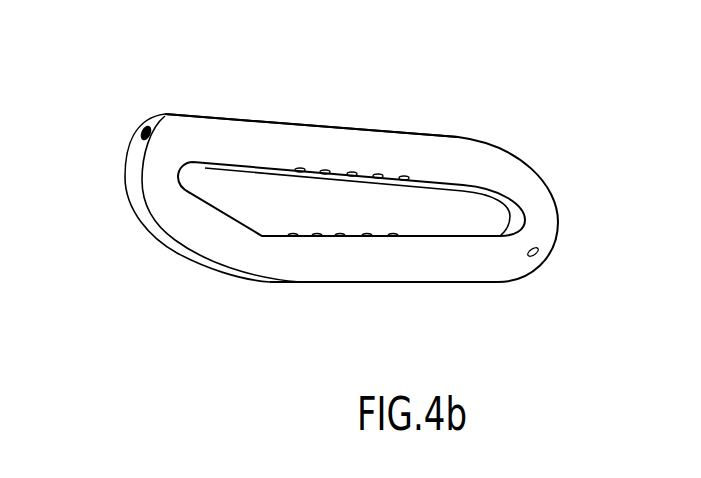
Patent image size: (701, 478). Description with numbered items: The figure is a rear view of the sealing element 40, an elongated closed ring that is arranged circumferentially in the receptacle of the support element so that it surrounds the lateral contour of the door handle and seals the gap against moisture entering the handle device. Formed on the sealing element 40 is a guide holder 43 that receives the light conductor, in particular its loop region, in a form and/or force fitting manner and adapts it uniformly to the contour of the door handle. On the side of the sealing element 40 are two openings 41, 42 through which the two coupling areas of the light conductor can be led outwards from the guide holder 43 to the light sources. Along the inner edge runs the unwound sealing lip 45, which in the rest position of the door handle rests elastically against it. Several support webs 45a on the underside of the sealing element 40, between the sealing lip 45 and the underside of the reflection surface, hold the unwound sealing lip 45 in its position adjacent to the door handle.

The sealing element 40 is at (538, 212).
The opening 41 is at (141, 129).
The opening 42 is at (540, 253).
The guide holder 43 is at (252, 112).
The sealing lip 45 is at (322, 174).
The support webs 45a is at (460, 183).